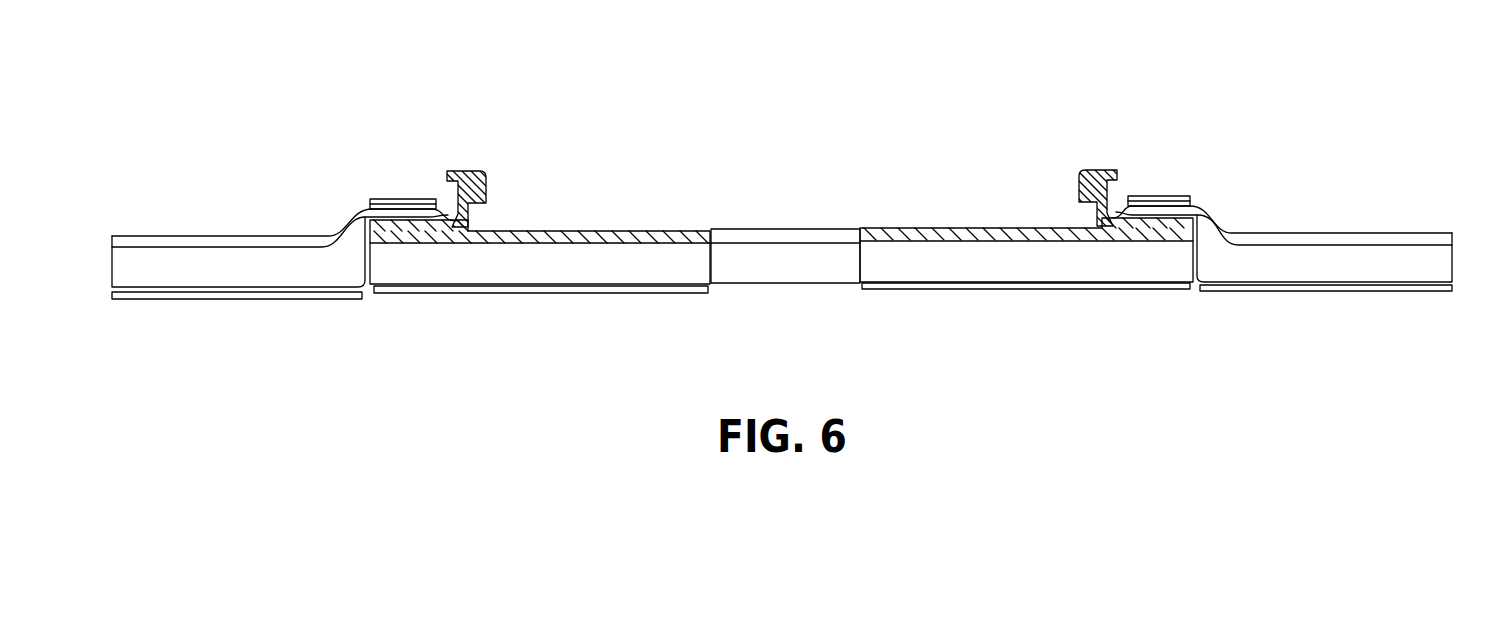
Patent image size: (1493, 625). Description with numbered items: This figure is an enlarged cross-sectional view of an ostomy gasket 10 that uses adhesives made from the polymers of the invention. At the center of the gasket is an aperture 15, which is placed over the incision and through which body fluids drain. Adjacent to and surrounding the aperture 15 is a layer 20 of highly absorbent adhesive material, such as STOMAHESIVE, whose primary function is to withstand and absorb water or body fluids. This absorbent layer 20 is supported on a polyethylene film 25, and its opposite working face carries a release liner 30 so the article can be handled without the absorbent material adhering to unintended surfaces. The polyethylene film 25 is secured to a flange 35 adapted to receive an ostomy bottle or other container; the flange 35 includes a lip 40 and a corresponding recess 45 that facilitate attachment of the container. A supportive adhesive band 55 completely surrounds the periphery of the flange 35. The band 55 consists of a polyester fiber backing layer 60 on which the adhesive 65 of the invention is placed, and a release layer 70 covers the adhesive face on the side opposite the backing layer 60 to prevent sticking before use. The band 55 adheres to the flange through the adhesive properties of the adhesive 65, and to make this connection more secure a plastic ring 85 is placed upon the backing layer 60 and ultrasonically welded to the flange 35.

The ostomy gasket 10 is at (476, 386).
The aperture 15 is at (813, 285).
The layer of adhesive material 20 is at (660, 265).
The polyethylene film 25 is at (548, 231).
The release liner 30 is at (540, 290).
The flange 35 is at (432, 165).
The lip 40 is at (1122, 170).
The recess 45 is at (1084, 212).
The supportive adhesive band 55 is at (1341, 306).
The polyester fiber backing layer 60 is at (262, 236).
The adhesive 65 is at (227, 272).
The release layer 70 is at (282, 292).
The plastic ring 85 is at (390, 199).